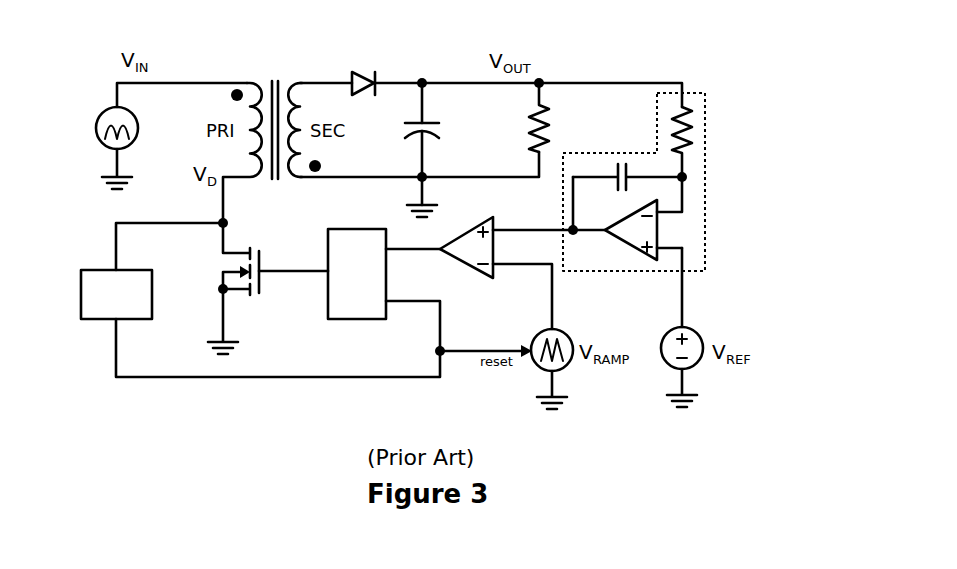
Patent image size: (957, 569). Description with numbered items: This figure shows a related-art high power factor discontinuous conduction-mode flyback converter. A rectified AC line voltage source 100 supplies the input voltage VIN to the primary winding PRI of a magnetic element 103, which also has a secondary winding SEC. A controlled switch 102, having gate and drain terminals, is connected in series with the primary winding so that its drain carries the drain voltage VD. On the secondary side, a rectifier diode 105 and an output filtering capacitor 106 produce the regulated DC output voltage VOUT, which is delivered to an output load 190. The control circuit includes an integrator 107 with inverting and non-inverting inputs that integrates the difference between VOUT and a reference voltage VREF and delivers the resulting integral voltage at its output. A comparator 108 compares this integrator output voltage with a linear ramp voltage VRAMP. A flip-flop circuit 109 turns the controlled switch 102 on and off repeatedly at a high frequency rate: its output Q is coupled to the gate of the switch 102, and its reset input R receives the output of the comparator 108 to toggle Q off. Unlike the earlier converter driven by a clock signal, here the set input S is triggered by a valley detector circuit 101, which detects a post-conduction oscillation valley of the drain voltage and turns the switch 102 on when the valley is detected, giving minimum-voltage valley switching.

The rectified AC line voltage source 100 is at (105, 107).
The valley detector circuit 101 is at (103, 268).
The controlled switch 102 is at (213, 272).
The magnetic element 103 is at (275, 72).
The rectifier diode 105 is at (365, 72).
The output filtering capacitor 106 is at (440, 130).
The integrator 107 is at (712, 230).
The comparator 108 is at (468, 270).
The flip-flop circuit 109 is at (318, 250).
The output load 190 is at (560, 130).